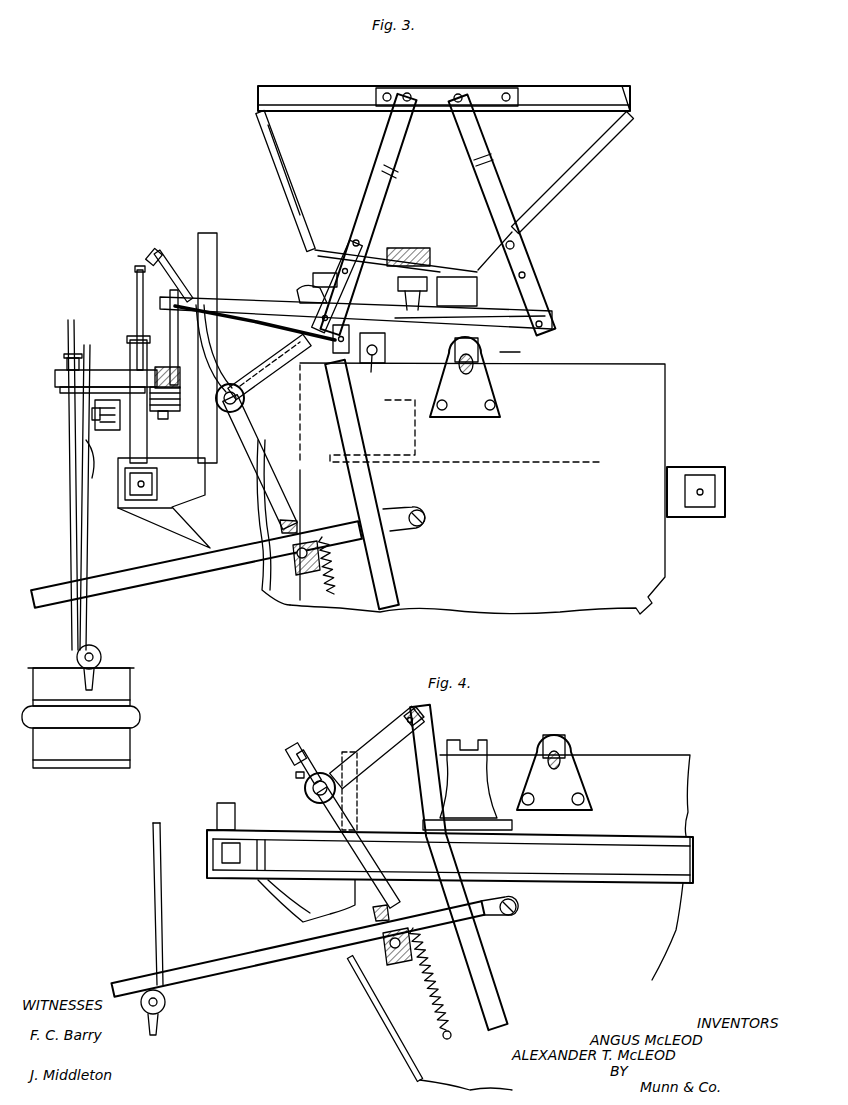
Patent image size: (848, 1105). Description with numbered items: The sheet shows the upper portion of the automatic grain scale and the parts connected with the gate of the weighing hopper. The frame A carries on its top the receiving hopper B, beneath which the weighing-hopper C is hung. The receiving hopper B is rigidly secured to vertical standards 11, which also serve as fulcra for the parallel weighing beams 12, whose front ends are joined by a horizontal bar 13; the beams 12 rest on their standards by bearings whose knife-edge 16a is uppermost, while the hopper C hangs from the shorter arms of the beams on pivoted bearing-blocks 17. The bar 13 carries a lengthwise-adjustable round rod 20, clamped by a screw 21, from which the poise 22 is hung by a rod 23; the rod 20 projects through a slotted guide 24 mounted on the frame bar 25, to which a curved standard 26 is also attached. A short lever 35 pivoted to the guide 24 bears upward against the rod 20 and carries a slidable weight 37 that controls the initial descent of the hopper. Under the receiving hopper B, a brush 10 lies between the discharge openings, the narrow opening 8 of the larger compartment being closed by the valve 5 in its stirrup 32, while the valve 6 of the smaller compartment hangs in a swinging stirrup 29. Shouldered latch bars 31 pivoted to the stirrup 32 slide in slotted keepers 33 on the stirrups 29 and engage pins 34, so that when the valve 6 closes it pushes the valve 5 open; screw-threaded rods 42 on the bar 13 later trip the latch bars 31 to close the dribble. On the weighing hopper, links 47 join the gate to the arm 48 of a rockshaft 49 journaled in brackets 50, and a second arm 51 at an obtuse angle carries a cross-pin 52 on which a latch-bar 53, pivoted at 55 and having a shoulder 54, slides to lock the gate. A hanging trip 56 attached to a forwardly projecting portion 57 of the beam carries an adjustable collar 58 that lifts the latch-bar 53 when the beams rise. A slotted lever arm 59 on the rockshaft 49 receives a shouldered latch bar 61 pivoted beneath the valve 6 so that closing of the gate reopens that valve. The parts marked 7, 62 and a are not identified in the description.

In FIG. 3, the valve 5 is at (538, 312).
In FIG. 3, the valve 6 is at (258, 200).
In FIG. 3, the hopper side 7 is at (282, 190).
In FIG. 3, the discharge opening 8 is at (283, 252).
In FIG. 3, the brush 10 is at (432, 280).
In FIG. 4, the brush 10 is at (570, 752).
In FIG. 3, the standards 11 is at (385, 425).
In FIG. 4, the standards 11 is at (427, 785).
In FIG. 3, the weighing beams 12 is at (388, 348).
In FIG. 3, the horizontal bar 13 is at (162, 412).
In FIG. 3, the knife-edge 16a is at (373, 374).
In FIG. 3, the bearing-block 17 is at (480, 352).
In FIG. 4, the bearing-block 17 is at (565, 740).
In FIG. 3, the rod 20 is at (98, 375).
In FIG. 3, the screw 21 is at (163, 420).
In FIG. 3, the poise 22 is at (81, 718).
In FIG. 3, the rod 23 is at (92, 430).
In FIG. 3, the slotted guide 24 is at (135, 340).
In FIG. 4, the slotted guide 24 is at (217, 810).
In FIG. 3, the frame bar 25 is at (157, 484).
In FIG. 3, the curved standard 26 is at (210, 245).
In FIG. 3, the stirrup 29 is at (372, 212).
In FIG. 3, the latch bars 31 is at (228, 304).
In FIG. 3, the stirrup 32 is at (528, 262).
In FIG. 3, the slotted keepers 33 is at (352, 262).
In FIG. 3, the pins 34 is at (295, 345).
In FIG. 3, the short lever 35 is at (250, 375).
In FIG. 3, the slidable weight 37 is at (95, 402).
In FIG. 3, the screw-threaded rods 42 is at (170, 300).
In FIG. 3, the links 47 is at (342, 428).
In FIG. 4, the links 47 is at (418, 770).
In FIG. 3, the arm 48 is at (272, 372).
In FIG. 4, the arm 48 is at (392, 724).
In FIG. 3, the rockshaft 49 is at (245, 399).
In FIG. 4, the rockshaft 49 is at (342, 798).
In FIG. 4, the brackets 50 is at (352, 790).
In FIG. 3, the arm 51 is at (258, 440).
In FIG. 4, the arm 51 is at (380, 890).
In FIG. 3, the cross-pin 52 is at (315, 569).
In FIG. 4, the cross-pin 52 is at (400, 968).
In FIG. 3, the latch-bar 53 is at (196, 564).
In FIG. 4, the latch-bar 53 is at (315, 946).
In FIG. 3, the shoulder 54 is at (298, 568).
In FIG. 4, the shoulder 54 is at (390, 962).
In FIG. 3, the pivot 55 is at (425, 514).
In FIG. 4, the pivot 55 is at (514, 912).
In FIG. 3, the hanging trip 56 is at (67, 330).
In FIG. 4, the hanging trip 56 is at (155, 890).
In FIG. 3, the forwardly projecting portion 57 is at (66, 372).
In FIG. 3, the collar 58 is at (100, 654).
In FIG. 4, the collar 58 is at (167, 1002).
In FIG. 3, the slotted lever arm 59 is at (160, 252).
In FIG. 4, the slotted lever arm 59 is at (306, 750).
In FIG. 3, the latch bar 61 is at (255, 322).
In FIG. 3, the rod 62 is at (138, 278).
In FIG. 3, the frame A is at (696, 483).
In FIG. 4, the frame A is at (450, 856).
In FIG. 3, the receiving hopper B is at (445, 179).
In FIG. 3, the weighing-hopper C is at (461, 488).
In FIG. 4, the weighing-hopper C is at (555, 922).
In FIG. 3, the detail a is at (217, 327).